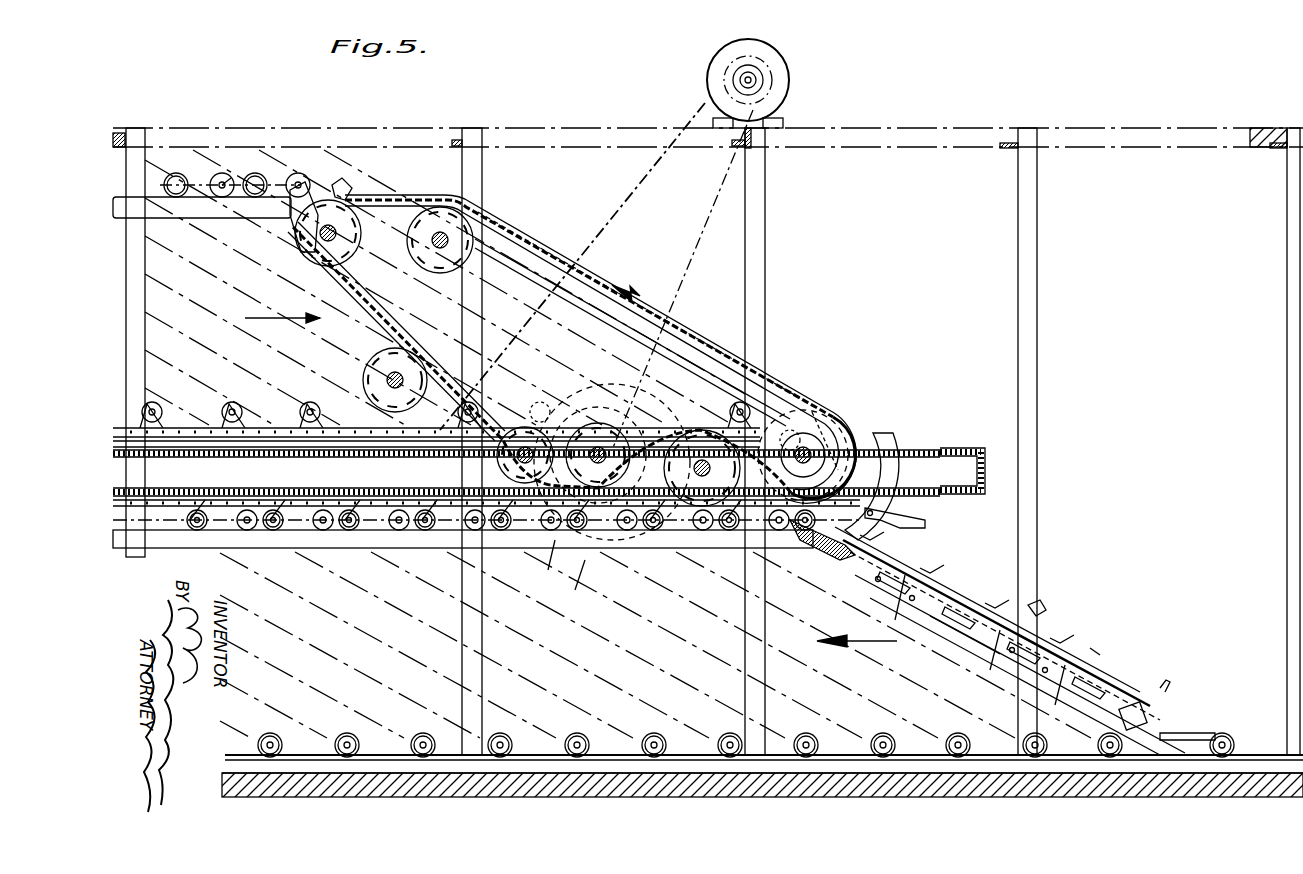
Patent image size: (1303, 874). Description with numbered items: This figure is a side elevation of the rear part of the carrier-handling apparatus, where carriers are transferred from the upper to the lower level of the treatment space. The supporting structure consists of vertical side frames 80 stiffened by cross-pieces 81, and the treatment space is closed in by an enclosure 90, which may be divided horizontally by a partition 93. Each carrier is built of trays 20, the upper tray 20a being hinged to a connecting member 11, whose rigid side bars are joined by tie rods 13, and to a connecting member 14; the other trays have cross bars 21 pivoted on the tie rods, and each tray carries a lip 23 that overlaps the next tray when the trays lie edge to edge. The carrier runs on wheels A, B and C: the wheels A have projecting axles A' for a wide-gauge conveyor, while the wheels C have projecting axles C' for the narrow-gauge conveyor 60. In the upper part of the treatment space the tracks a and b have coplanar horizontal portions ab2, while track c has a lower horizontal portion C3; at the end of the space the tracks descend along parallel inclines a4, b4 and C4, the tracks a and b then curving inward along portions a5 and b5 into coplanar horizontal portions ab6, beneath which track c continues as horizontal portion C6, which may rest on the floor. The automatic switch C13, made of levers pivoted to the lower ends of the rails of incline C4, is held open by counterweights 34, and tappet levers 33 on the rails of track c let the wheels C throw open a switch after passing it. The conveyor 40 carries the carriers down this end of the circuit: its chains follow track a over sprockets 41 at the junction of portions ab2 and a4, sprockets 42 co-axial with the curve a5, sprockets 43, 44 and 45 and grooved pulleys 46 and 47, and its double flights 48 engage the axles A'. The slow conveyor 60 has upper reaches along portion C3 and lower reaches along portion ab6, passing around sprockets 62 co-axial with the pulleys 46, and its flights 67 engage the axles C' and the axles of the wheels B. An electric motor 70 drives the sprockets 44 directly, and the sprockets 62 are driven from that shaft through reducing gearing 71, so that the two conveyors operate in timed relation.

The enclosure 90 is at (925, 128).
The vertical side frames 80 is at (765, 252).
The cross-pieces 81 is at (452, 140).
The electric motor 70 is at (785, 78).
The reducing gearing 71 is at (640, 548).
The coplanar horizontal track portions ab2 is at (172, 212).
The wheels B is at (343, 545).
The wheels A is at (292, 365).
The projecting axles A' is at (318, 352).
The upper tray 20a is at (282, 180).
The conveyor 40 is at (405, 197).
The inclined track portion a4 is at (690, 335).
The inclined track portion b4 is at (600, 326).
The sprocket 45 is at (350, 250).
The connecting member 14 is at (405, 235).
The sprockets 41 is at (470, 218).
The grooved pulley 47 is at (365, 375).
The sprockets 44 is at (497, 460).
The sprockets 62 is at (670, 548).
The grooved pulley 46 is at (705, 506).
The sprockets 42 is at (825, 425).
The wheel C'' is at (814, 411).
The curved track portion b5 is at (848, 416).
The curved track portion a5 is at (880, 435).
The partition 93 is at (958, 448).
The conveyor 60 is at (290, 440).
The horizontal track portion C3 is at (190, 445).
The flights 67 is at (198, 410).
The wheels C is at (699, 554).
The projecting axles C' is at (591, 562).
The horizontal track portion C6 is at (830, 765).
The automatic switch C13 is at (1190, 730).
The trays 20 is at (925, 582).
The cross bars 21 is at (882, 582).
The tie rods 13 is at (918, 604).
The connecting member 11 is at (965, 635).
The tappet levers 33 is at (890, 526).
The lip 23 is at (1032, 604).
The inclined track portion C4 is at (1070, 636).
The counterweights 34 is at (1140, 705).
The double flights 48 is at (810, 538).
The sprocket 43 is at (541, 563).
The coplanar horizontal track portions ab6 is at (572, 585).